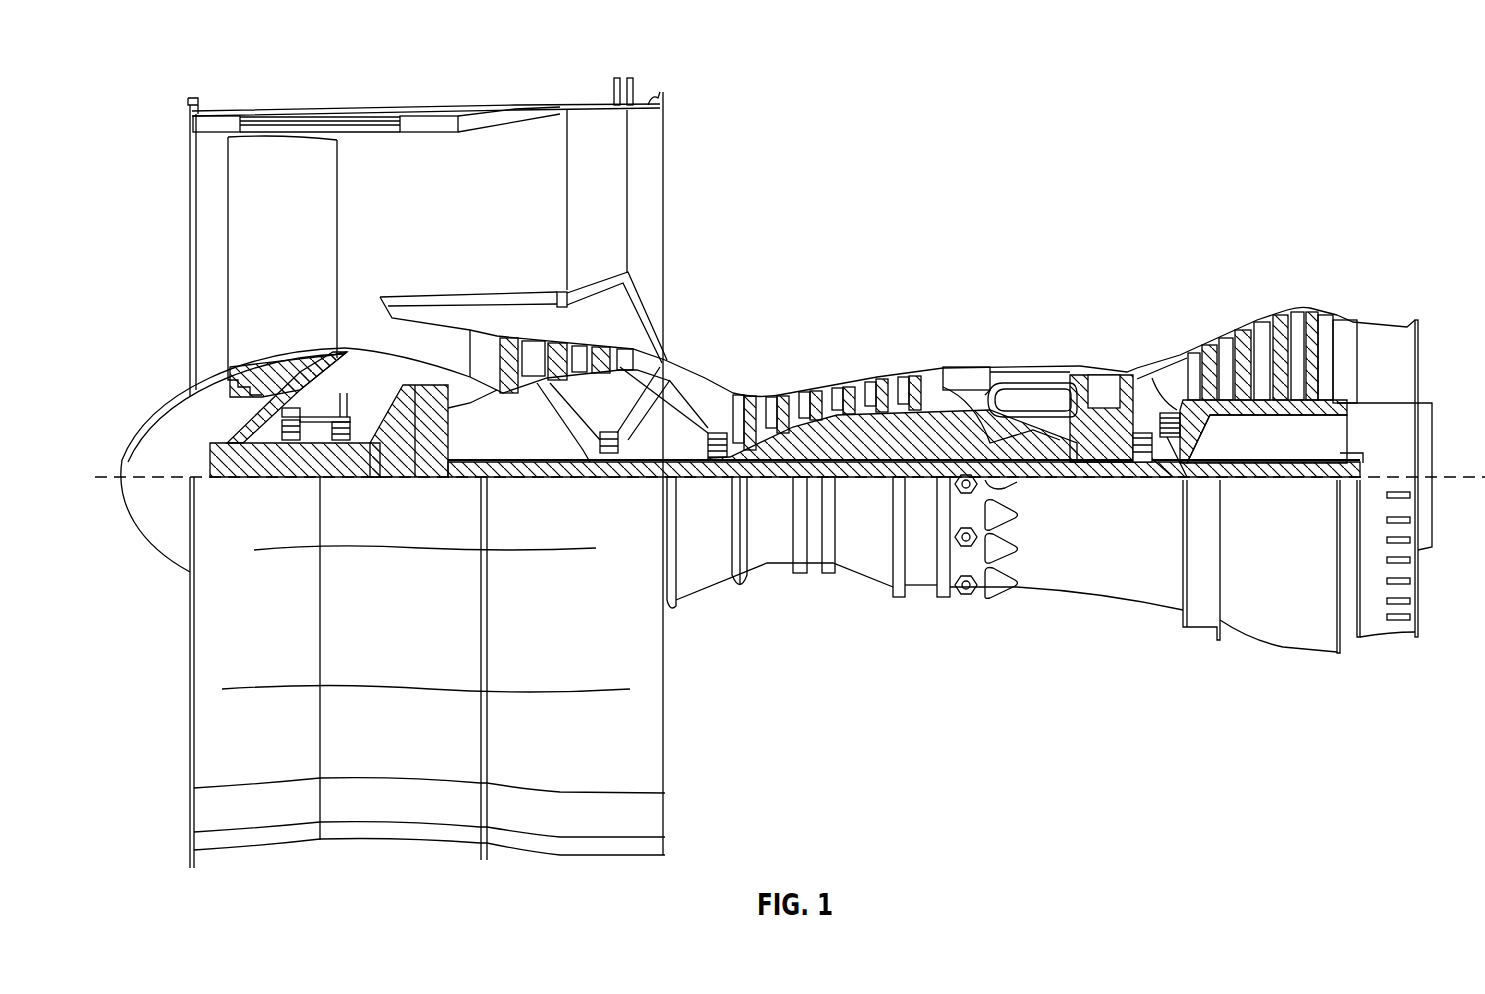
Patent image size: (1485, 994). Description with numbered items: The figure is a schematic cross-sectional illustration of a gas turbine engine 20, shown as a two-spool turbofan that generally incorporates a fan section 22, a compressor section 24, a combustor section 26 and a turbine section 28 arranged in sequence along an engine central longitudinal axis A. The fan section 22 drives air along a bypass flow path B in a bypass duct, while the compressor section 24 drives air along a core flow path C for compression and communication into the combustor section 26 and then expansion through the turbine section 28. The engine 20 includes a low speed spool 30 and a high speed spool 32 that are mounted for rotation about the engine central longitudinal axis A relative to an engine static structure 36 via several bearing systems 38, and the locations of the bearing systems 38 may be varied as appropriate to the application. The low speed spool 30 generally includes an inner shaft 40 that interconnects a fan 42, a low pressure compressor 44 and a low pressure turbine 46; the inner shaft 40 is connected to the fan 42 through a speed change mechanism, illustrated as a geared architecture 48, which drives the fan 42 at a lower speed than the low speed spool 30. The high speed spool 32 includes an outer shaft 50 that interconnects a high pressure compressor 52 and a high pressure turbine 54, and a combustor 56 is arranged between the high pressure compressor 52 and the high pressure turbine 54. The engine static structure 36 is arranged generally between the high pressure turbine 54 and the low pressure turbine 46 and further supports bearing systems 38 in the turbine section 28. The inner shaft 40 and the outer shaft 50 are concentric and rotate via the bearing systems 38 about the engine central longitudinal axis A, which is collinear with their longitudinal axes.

The gas turbine engine 20 is at (1240, 145).
The fan section 22 is at (303, 107).
The compressor section 24 is at (855, 334).
The combustor section 26 is at (1018, 333).
The turbine section 28 is at (1168, 311).
The low speed spool 30 is at (887, 482).
The high speed spool 32 is at (936, 425).
The engine static structure 36 is at (927, 596).
The bearing systems 38 is at (293, 442).
The inner shaft 40 is at (677, 478).
The fan 42 is at (276, 233).
The low pressure compressor 44 is at (576, 358).
The low pressure turbine 46 is at (1270, 328).
The geared architecture 48 is at (432, 440).
The outer shaft 50 is at (1050, 456).
The high pressure compressor 52 is at (848, 447).
The high pressure turbine 54 is at (1110, 372).
The combustor 56 is at (1030, 397).
The engine central longitudinal axis A is at (1440, 472).
The bypass flow path B is at (517, 205).
The core flow path C is at (383, 334).